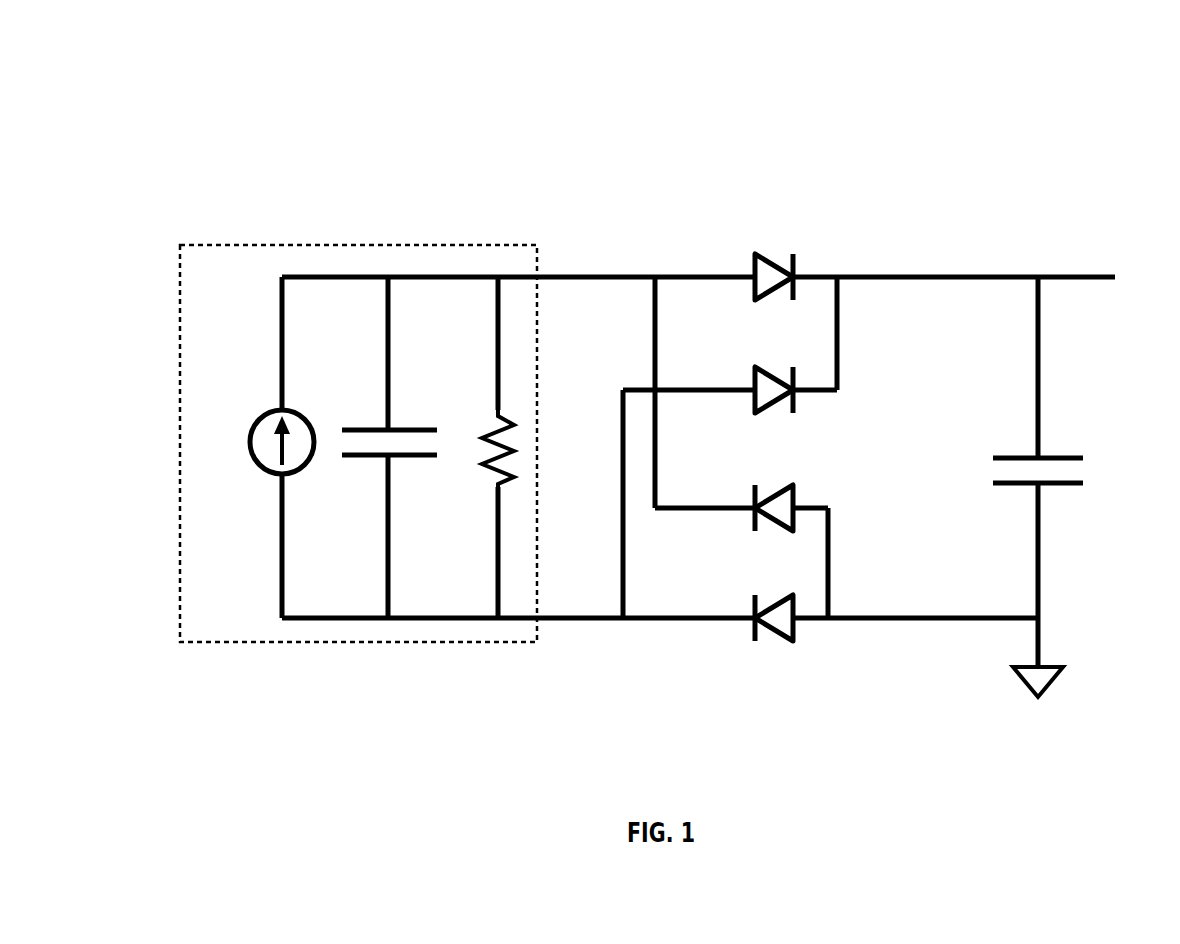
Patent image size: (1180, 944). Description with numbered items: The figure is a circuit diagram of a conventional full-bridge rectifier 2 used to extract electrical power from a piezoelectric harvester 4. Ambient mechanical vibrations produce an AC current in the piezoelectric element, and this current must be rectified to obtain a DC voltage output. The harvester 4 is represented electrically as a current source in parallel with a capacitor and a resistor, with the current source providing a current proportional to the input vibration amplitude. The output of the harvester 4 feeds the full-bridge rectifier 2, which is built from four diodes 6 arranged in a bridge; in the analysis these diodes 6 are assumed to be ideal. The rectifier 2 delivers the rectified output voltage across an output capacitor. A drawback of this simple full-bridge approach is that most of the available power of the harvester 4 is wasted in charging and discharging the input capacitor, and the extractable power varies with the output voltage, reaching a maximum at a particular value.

The full-bridge rectifier 2 is at (200, 100).
The harvester 4 is at (417, 423).
The diodes 6 is at (766, 368).